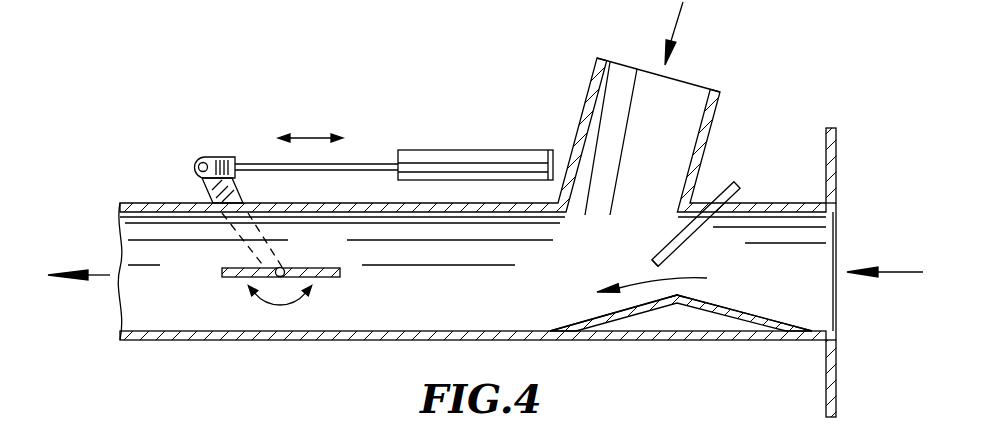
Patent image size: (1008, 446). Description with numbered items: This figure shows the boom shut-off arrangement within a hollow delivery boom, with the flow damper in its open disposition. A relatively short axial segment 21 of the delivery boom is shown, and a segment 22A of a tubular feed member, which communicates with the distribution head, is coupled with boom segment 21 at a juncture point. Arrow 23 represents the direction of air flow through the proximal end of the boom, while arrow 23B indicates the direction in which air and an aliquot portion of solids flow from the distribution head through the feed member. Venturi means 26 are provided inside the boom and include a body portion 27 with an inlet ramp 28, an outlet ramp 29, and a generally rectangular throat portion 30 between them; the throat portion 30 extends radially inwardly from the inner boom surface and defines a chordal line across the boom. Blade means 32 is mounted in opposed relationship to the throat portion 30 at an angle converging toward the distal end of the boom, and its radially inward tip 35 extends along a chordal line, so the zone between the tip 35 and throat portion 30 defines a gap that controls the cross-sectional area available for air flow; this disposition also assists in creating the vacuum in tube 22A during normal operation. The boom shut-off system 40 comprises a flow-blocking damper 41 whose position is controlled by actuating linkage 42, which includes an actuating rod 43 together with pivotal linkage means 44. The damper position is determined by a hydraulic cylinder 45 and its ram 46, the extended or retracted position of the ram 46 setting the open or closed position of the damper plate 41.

The axial segment of delivery boom 21 is at (240, 343).
The segment of tubular feed member 22A is at (595, 72).
The arrow indicating direction of air flow 23 is at (898, 272).
The arrow indicating flow direction in feed tube 23B is at (682, 23).
The Venturi means 26 is at (740, 305).
The body portion 27 is at (666, 305).
The inlet ramp 28 is at (755, 318).
The outlet ramp 29 is at (593, 318).
The throat portion 30 is at (672, 272).
The blade means 32 is at (730, 183).
The tip of blade 35 is at (655, 266).
The boom shut-off system 40 is at (278, 118).
The flow-blocking damper 41 is at (233, 268).
The actuating linkage 42 is at (207, 195).
The actuating rod 43 is at (285, 268).
The pivotal linkage means 44 is at (203, 160).
The hydraulic cylinder 45 is at (532, 152).
The ram 46 is at (384, 164).